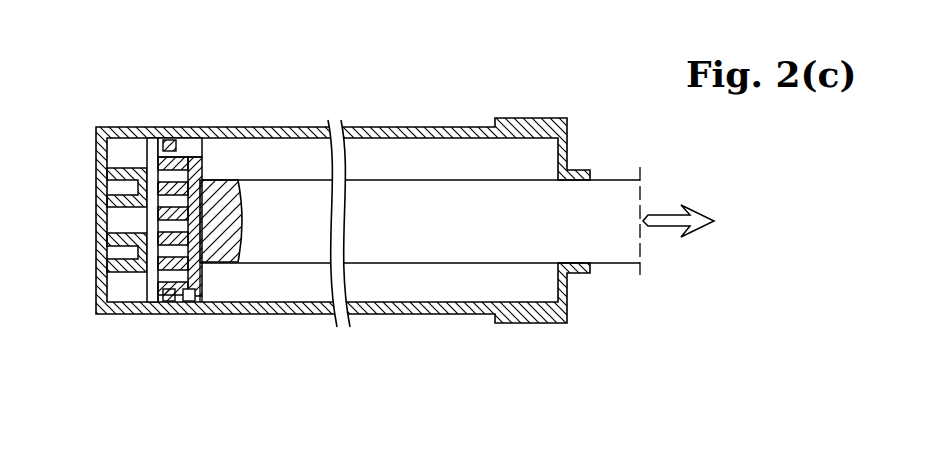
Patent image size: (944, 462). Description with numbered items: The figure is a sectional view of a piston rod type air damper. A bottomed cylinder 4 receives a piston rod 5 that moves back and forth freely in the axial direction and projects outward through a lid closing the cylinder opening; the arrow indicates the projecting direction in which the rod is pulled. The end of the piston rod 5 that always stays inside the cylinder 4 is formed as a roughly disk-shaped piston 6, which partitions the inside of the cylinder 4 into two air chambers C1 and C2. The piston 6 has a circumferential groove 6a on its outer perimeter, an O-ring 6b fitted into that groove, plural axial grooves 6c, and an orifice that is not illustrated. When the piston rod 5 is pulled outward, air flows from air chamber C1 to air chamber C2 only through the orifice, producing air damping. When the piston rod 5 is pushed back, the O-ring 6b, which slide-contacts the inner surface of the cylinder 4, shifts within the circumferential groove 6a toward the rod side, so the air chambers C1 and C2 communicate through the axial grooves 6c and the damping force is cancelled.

The cylinder 4 is at (408, 128).
The piston rod 5 is at (617, 188).
The piston 6 is at (148, 157).
The circumferential groove 6a is at (186, 298).
The O-ring 6b is at (172, 140).
The axial grooves 6c is at (200, 301).
The air chamber C1 is at (297, 292).
The air chamber C2 is at (134, 288).